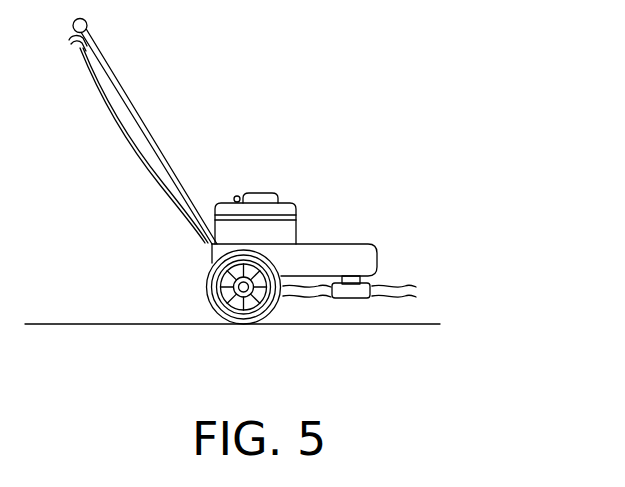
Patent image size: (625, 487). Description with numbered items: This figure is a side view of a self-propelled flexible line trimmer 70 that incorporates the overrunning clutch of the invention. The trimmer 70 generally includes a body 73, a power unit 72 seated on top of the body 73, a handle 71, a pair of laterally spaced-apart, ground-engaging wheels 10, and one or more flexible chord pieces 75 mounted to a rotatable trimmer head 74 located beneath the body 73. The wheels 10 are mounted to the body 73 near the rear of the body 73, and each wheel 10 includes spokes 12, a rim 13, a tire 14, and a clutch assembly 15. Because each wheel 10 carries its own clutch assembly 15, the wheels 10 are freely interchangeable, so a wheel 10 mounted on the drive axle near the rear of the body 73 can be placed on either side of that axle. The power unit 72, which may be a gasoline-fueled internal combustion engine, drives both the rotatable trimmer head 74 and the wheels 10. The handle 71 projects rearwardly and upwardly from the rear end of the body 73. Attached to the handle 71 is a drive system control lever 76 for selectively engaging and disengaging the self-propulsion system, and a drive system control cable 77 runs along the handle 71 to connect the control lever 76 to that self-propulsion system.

The ground-engaging wheel 10 is at (183, 255).
The spokes 12 is at (212, 258).
The rim 13 is at (223, 312).
The tire 14 is at (207, 290).
The clutch assembly 15 is at (252, 294).
The flexible line trimmer 70 is at (345, 124).
The handle 71 is at (108, 58).
The power unit 72 is at (258, 193).
The body 73 is at (350, 245).
The rotatable trimmer head 74 is at (353, 299).
The flexible chord pieces 75 is at (410, 284).
The drive system control lever 76 is at (71, 45).
The drive system control cable 77 is at (120, 128).